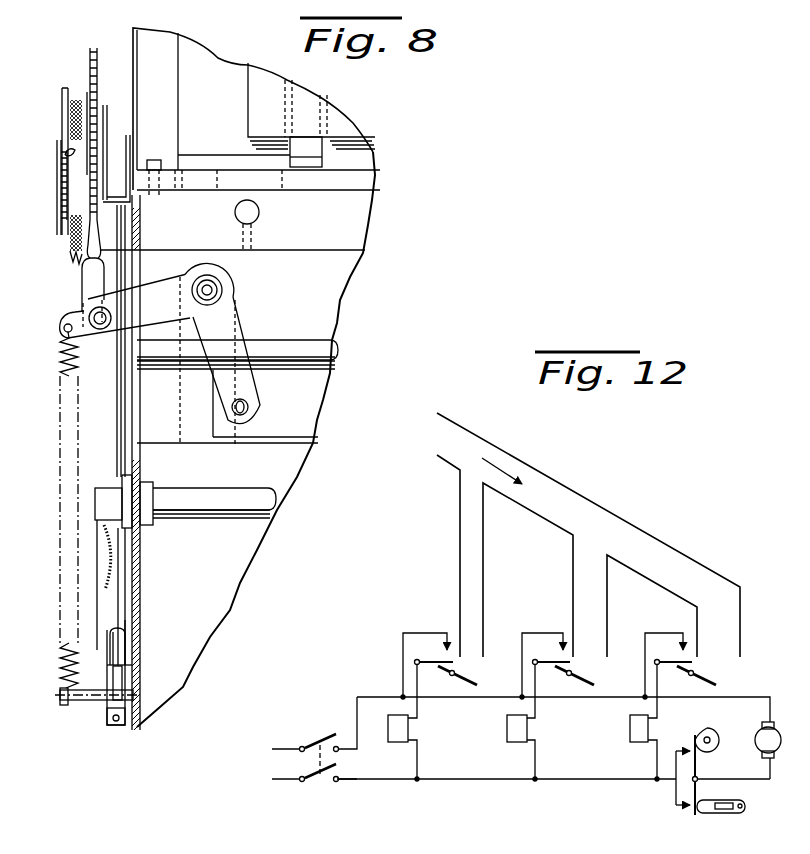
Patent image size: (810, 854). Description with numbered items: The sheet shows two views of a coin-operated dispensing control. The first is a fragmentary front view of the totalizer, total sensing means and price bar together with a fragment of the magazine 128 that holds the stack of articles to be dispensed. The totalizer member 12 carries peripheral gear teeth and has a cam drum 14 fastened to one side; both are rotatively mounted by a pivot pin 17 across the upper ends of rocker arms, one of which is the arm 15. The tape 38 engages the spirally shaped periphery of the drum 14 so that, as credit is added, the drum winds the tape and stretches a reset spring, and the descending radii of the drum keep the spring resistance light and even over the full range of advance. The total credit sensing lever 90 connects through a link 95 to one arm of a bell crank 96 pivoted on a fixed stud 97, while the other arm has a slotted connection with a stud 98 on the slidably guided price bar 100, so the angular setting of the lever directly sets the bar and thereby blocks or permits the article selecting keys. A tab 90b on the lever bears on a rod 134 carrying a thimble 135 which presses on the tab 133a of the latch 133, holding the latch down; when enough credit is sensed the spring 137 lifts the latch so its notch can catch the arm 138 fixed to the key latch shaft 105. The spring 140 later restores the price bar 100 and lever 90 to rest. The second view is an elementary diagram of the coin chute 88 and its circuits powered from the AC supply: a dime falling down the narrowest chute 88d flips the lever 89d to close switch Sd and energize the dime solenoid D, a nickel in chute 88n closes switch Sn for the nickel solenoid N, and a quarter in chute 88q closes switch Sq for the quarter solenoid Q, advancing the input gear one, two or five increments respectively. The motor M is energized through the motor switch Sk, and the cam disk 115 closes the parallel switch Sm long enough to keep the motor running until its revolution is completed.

In FIG. 8, the totalizer member 12 is at (89, 58).
In FIG. 8, the cam drum 14 is at (64, 104).
In FIG. 8, the arm 15 is at (60, 165).
In FIG. 8, the pivot pin 17 is at (72, 150).
In FIG. 8, the tape 38 is at (75, 232).
In FIG. 8, the total credit sensing lever 90 is at (106, 108).
In FIG. 8, the tab 90b is at (130, 200).
In FIG. 8, the link 95 is at (88, 290).
In FIG. 8, the bell crank 96 is at (163, 282).
In FIG. 8, the fixed stud 97 is at (212, 290).
In FIG. 8, the stud 98 is at (103, 330).
In FIG. 8, the price bar 100 is at (310, 392).
In FIG. 8, the key latch shaft 105 is at (233, 513).
In FIG. 8, the magazine 128 is at (200, 57).
In FIG. 8, the latch 133 is at (110, 723).
In FIG. 8, the tab 133a is at (137, 680).
In FIG. 8, the rod 134 is at (123, 380).
In FIG. 8, the thimble 135 is at (137, 642).
In FIG. 8, the spring 137 is at (117, 727).
In FIG. 8, the arm 138 is at (115, 560).
In FIG. 8, the spring 140 is at (62, 362).
In FIG. 12, the coin chute 88 is at (500, 457).
In FIG. 12, the dime chute 88d is at (465, 560).
In FIG. 12, the nickel chute 88n is at (580, 592).
In FIG. 12, the quarter chute 88q is at (725, 625).
In FIG. 12, the lever 89d is at (465, 688).
In FIG. 12, the cam disk 115 is at (717, 731).
In FIG. 12, the dime micro switch Sd is at (445, 656).
In FIG. 12, the nickel micro switch Sn is at (563, 656).
In FIG. 12, the quarter micro switch Sq is at (685, 656).
In FIG. 12, the parallel switch Sm is at (694, 737).
In FIG. 12, the motor switch Sk is at (694, 814).
In FIG. 12, the dime solenoid D is at (398, 728).
In FIG. 12, the nickel solenoid N is at (517, 728).
In FIG. 12, the quarter solenoid Q is at (639, 728).
In FIG. 12, the motor M is at (768, 750).
In FIG. 12, the AC supply AC is at (312, 739).